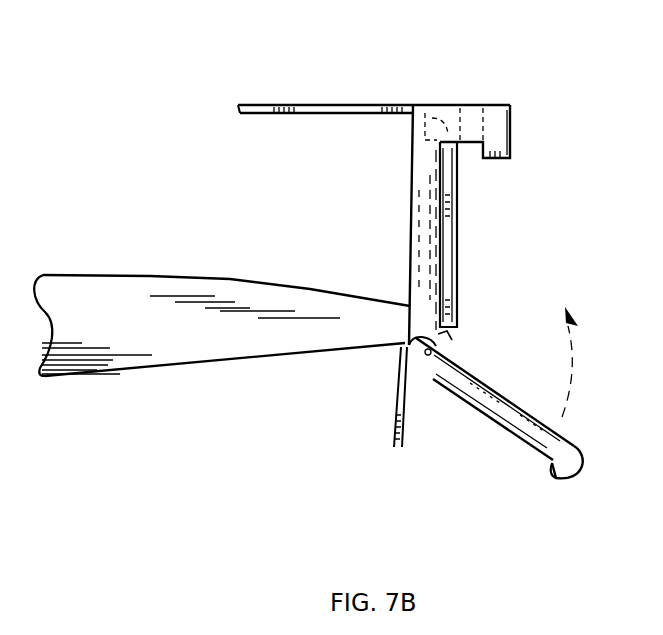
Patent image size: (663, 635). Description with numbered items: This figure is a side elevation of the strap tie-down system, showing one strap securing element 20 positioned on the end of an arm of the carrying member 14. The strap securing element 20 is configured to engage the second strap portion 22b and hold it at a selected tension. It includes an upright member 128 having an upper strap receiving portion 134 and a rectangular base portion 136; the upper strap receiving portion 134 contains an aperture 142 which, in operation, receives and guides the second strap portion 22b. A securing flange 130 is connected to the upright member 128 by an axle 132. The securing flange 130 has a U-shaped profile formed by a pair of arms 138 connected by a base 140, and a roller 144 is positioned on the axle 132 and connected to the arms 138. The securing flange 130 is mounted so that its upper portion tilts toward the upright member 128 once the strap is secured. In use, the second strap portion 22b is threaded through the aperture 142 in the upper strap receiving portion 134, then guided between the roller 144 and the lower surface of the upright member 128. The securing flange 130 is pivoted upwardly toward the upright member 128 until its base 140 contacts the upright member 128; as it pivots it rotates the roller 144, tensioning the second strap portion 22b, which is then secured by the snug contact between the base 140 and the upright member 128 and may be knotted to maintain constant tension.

The carrying member 14 is at (108, 287).
The strap securing element 20 is at (513, 65).
The second strap portion 22b is at (308, 107).
The upright member 128 is at (398, 222).
The securing flange 130 is at (528, 469).
The axle 132 is at (398, 367).
The upper strap receiving portion 134 is at (511, 118).
The rectangular base portion 136 is at (411, 288).
The arms 138 is at (525, 428).
The base 140 is at (580, 477).
The aperture 142 is at (460, 108).
The roller 144 is at (446, 336).